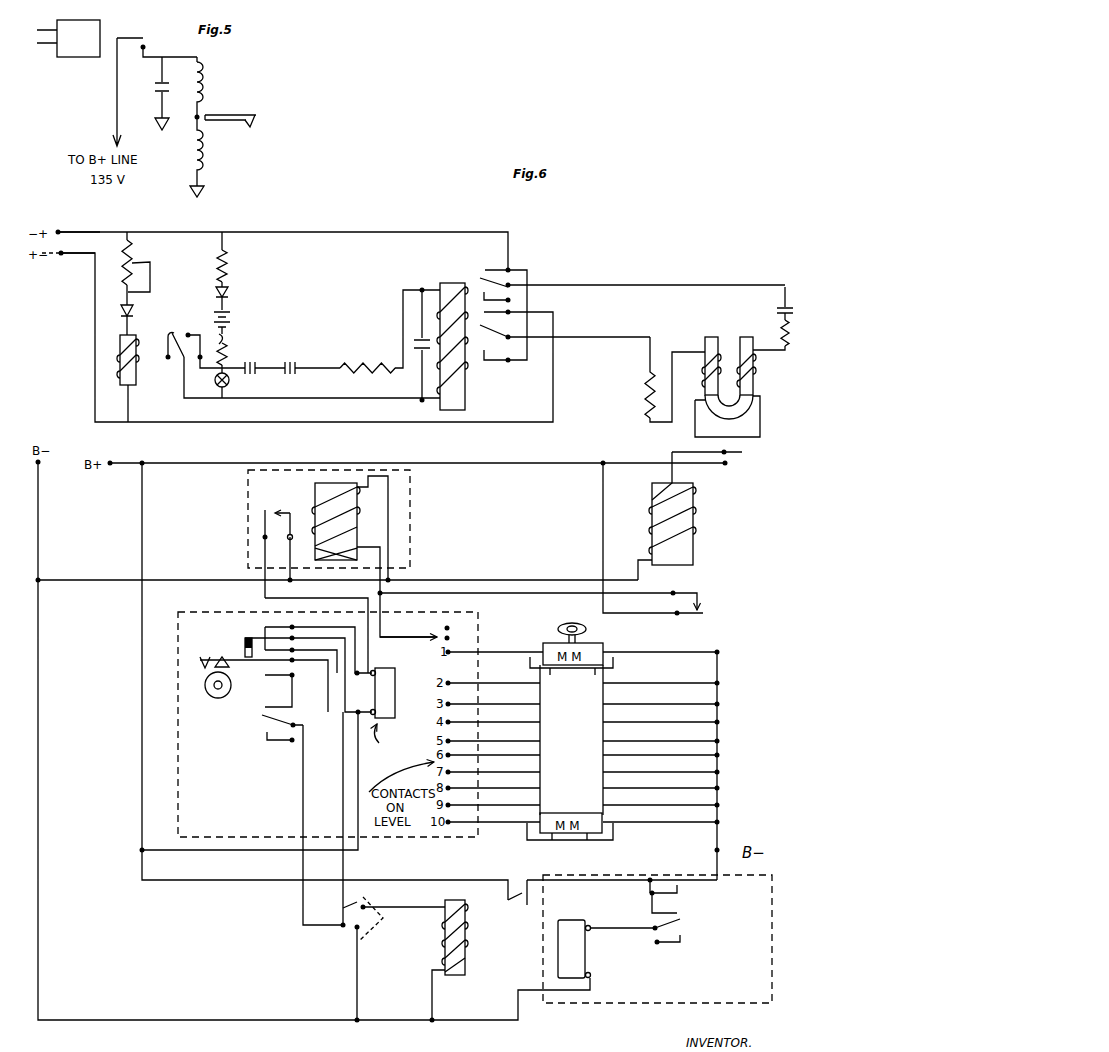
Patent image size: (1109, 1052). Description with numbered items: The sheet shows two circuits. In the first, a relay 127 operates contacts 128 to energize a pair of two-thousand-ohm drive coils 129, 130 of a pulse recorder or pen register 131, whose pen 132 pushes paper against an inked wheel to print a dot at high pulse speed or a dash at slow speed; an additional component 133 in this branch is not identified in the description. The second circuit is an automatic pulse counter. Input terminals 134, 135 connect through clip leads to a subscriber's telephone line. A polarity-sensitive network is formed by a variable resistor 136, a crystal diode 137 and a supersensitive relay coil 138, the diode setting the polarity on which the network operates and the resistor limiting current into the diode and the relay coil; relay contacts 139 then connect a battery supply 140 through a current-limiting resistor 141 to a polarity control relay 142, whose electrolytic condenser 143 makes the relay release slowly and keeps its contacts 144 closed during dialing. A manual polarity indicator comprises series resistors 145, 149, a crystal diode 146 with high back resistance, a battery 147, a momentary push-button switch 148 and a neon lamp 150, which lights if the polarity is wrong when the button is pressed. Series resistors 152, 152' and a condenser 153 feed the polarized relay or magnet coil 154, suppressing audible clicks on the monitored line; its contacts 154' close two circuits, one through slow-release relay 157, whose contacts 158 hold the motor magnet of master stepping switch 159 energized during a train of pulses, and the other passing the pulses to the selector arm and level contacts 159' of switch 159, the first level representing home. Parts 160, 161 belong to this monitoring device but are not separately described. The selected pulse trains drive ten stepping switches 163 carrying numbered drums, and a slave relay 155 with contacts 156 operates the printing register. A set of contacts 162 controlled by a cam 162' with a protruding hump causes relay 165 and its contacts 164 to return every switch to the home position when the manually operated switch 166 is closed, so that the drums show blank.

In FIG. 5, the relay 127 is at (105, 29).
In FIG. 5, the contacts 128 is at (147, 36).
In FIG. 5, the drive coil 129 is at (210, 95).
In FIG. 5, the drive coil 130 is at (208, 162).
In FIG. 5, the pulse recorder 131 is at (256, 112).
In FIG. 5, the pen 132 is at (258, 121).
In FIG. 5, the potentiometer 133 is at (179, 72).
In FIG. 6, the input terminal 134 is at (64, 229).
In FIG. 6, the input terminal 135 is at (61, 258).
In FIG. 6, the variable resistor 136 is at (134, 264).
In FIG. 6, the crystal diode 137 is at (133, 312).
In FIG. 6, the relay coil 138 is at (111, 366).
In FIG. 6, the relay contacts 139 is at (182, 328).
In FIG. 6, the battery supply 140 is at (296, 378).
In FIG. 6, the current limiting resistor 141 is at (362, 362).
In FIG. 6, the polarity control relay 142 is at (439, 283).
In FIG. 6, the electrolytic condenser 143 is at (410, 345).
In FIG. 6, the contacts 144 is at (479, 343).
In FIG. 6, the series resistor 145 is at (231, 262).
In FIG. 6, the crystal diode 146 is at (233, 292).
In FIG. 6, the battery 147 is at (235, 320).
In FIG. 6, the push button switch 148 is at (232, 340).
In FIG. 6, the series resistor 149 is at (233, 355).
In FIG. 6, the neon lamp 150 is at (218, 388).
In FIG. 6, the series resistor 152 is at (630, 377).
In FIG. 6, the series resistor 152' is at (753, 330).
In FIG. 6, the condenser 153 is at (776, 306).
In FIG. 6, the magnet coil 154 is at (698, 391).
In FIG. 6, the contacts 154' is at (735, 457).
In FIG. 6, the slave relay 155 is at (706, 509).
In FIG. 6, the contacts 156 is at (708, 606).
In FIG. 6, the slow release relay 157 is at (372, 513).
In FIG. 6, the contacts 158 is at (259, 525).
In FIG. 6, the control stepping switch 159 is at (398, 700).
In FIG. 6, the contacts 159' is at (374, 689).
In FIG. 6, the home contact 160 is at (455, 631).
In FIG. 6, the indicator 161 is at (590, 631).
In FIG. 6, the contacts 162 is at (279, 752).
In FIG. 6, the cam 162' is at (158, 682).
In FIG. 6, the stepping switch 163 is at (212, 702).
In FIG. 6, the contacts 164 is at (516, 912).
In FIG. 6, the relay 165 is at (457, 983).
In FIG. 6, the manually operated switch 166 is at (348, 938).